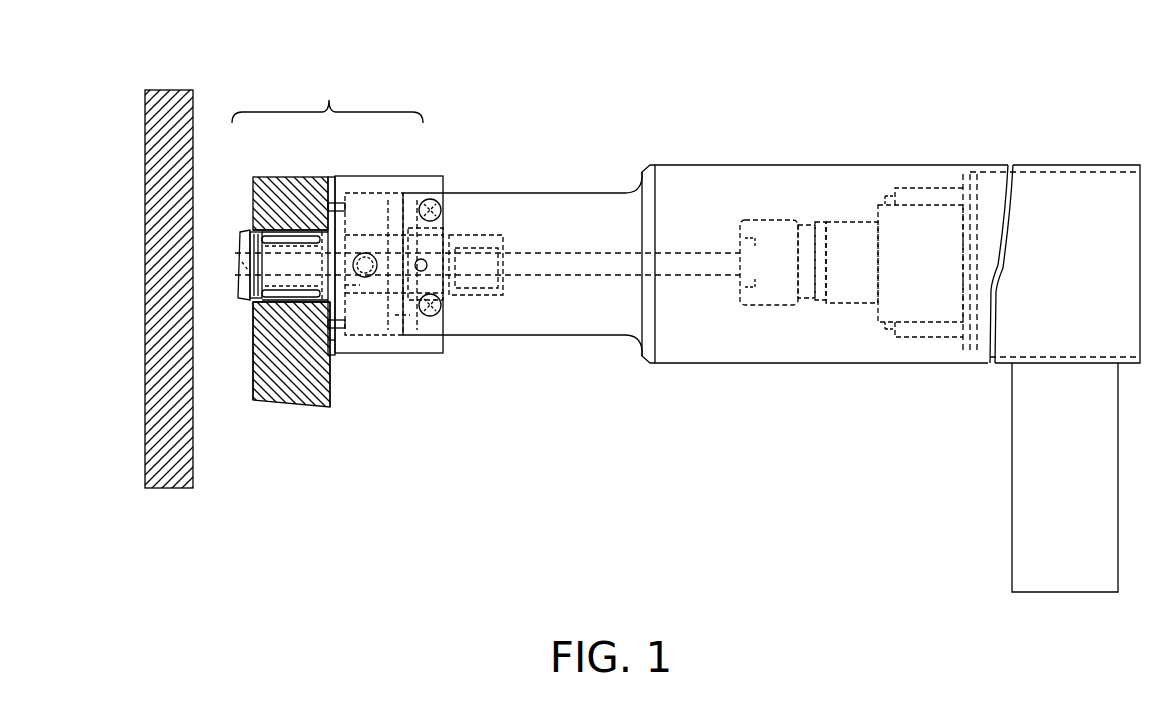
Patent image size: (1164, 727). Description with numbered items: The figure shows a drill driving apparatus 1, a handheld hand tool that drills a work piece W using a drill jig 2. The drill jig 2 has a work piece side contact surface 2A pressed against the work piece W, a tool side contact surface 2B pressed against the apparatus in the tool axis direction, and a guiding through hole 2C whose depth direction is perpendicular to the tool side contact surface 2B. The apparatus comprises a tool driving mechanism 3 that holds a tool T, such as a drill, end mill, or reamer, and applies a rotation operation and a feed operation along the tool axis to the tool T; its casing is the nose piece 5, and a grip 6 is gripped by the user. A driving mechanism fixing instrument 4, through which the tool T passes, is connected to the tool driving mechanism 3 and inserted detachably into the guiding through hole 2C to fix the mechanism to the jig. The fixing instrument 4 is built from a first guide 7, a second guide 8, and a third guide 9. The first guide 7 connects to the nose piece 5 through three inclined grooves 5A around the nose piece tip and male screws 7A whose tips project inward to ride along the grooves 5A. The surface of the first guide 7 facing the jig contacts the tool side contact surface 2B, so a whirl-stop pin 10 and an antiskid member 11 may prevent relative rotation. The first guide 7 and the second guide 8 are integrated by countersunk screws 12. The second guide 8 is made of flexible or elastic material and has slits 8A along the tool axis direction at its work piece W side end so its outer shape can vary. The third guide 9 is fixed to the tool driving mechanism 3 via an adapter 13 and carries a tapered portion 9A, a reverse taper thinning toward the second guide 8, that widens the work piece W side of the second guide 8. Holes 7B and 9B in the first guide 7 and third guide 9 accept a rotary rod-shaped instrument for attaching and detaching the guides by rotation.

The drill driving apparatus 1 is at (530, 97).
The drill jig 2 is at (282, 405).
The work piece side contact surface 2A is at (254, 372).
The tool side contact surface 2B is at (333, 372).
The guiding through hole 2C is at (256, 302).
The tool driving mechanism 3 is at (738, 162).
The driving mechanism fixing instrument 4 is at (327, 98).
The nose piece 5 is at (583, 193).
The grooves 5A is at (410, 298).
The grip 6 is at (1012, 480).
The first guide 7 is at (393, 177).
The male screw 7A is at (430, 199).
The hole 7B is at (366, 252).
The second guide 8 is at (293, 228).
The slits 8A is at (272, 222).
The third guide 9 is at (245, 231).
The tapered portion 9A is at (239, 233).
The hole 9B is at (367, 278).
The whirl-stop pin 10 is at (331, 178).
The antiskid member 11 is at (329, 356).
The countersunk screws 12 is at (348, 290).
The adapter 13 is at (398, 320).
The tool T is at (523, 273).
The work piece W is at (195, 455).